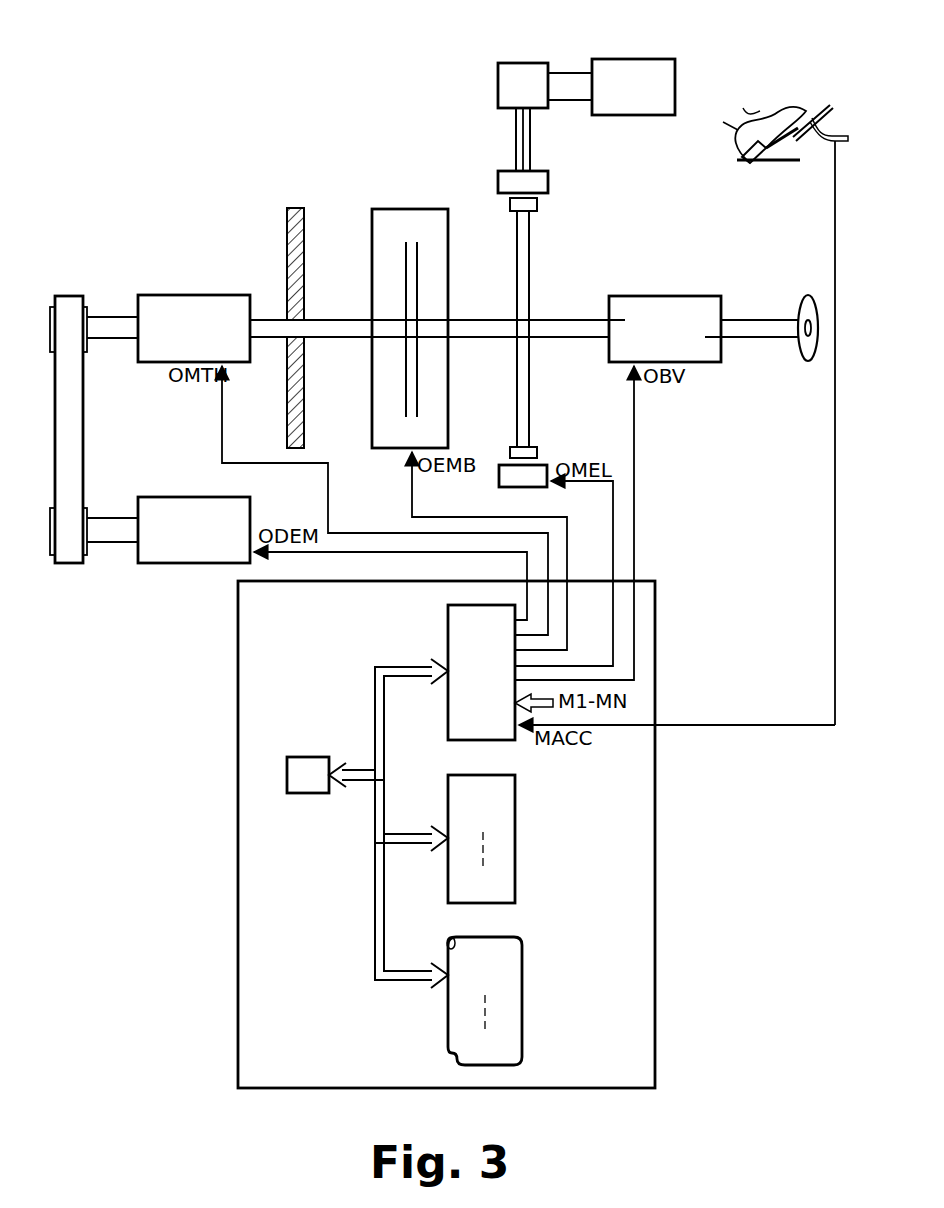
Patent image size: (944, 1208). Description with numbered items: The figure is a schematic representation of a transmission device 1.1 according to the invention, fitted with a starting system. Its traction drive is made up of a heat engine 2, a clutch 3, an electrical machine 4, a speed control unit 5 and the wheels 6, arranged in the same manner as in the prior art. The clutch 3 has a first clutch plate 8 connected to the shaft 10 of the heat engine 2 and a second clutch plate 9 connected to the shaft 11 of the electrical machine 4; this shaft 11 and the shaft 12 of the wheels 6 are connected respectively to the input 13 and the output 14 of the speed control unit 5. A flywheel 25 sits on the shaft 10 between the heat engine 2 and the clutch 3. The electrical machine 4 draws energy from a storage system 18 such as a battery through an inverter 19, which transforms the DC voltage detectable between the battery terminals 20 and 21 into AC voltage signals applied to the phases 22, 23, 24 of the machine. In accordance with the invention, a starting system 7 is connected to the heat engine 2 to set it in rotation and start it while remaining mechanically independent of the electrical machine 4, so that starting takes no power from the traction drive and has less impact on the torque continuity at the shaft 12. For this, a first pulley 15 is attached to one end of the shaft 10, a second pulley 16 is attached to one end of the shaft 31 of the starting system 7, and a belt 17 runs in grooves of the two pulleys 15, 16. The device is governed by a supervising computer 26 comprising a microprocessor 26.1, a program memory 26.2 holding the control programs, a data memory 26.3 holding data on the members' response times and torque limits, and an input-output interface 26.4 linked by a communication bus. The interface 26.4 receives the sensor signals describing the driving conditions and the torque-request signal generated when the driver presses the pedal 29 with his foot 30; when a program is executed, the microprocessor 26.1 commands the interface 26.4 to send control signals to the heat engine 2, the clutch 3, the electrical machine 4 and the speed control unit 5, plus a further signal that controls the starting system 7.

The transmission device 1.1 is at (272, 156).
The heat engine 2 is at (165, 295).
The clutch 3 is at (405, 209).
The electrical machine 4 is at (550, 262).
The speed control unit 5 is at (665, 296).
The wheels 6 is at (808, 296).
The starting system 7 is at (158, 563).
The first clutch plate 8 is at (406, 405).
The second clutch plate 9 is at (417, 385).
The shaft of the heat engine 10 is at (333, 340).
The shaft of the electrical machine 11 is at (567, 320).
The shaft of the wheels 12 is at (748, 340).
The input 13 is at (612, 330).
The output 14 is at (715, 325).
The first pulley 15 is at (50, 330).
The second pulley 16 is at (50, 535).
The belt 17 is at (84, 410).
The storage system 18 is at (630, 59).
The inverter 19 is at (522, 63).
The battery terminal 20 is at (565, 73).
The battery terminal 21 is at (575, 100).
The phase 22 is at (510, 117).
The phase 23 is at (516, 150).
The phase 24 is at (532, 127).
The flywheel 25 is at (287, 218).
The supervising computer 26 is at (655, 935).
The microprocessor 26.1 is at (305, 793).
The program memory 26.2 is at (522, 992).
The data memory 26.3 is at (515, 825).
The input-output interface 26.4 is at (487, 742).
The pedal 29 is at (830, 126).
The foot 30 is at (762, 113).
The shaft of the starting system 31 is at (112, 518).